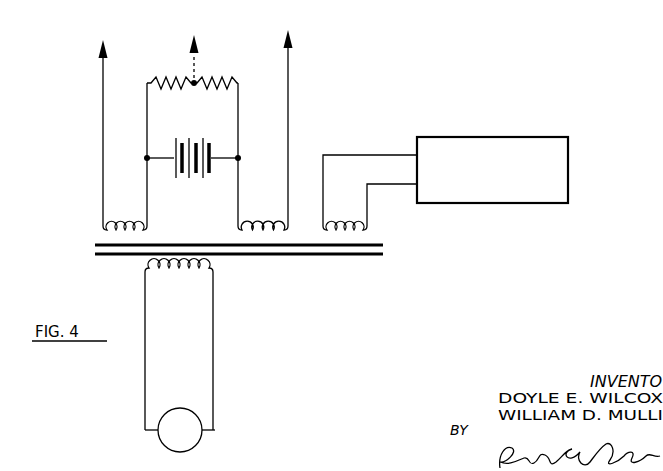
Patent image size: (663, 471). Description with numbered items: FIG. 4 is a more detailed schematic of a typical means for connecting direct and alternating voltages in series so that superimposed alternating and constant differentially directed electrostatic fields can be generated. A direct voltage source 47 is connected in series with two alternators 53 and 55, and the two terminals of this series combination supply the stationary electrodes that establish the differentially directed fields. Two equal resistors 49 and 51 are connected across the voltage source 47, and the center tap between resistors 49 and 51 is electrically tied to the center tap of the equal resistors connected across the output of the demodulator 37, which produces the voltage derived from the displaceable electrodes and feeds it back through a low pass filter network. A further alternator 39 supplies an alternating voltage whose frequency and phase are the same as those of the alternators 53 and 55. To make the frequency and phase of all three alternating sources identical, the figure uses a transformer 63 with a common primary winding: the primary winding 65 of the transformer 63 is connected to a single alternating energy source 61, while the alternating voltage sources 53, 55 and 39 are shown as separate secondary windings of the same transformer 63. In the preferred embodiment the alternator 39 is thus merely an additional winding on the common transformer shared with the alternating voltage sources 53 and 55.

The demodulator 37 is at (553, 158).
The alternator 39 is at (362, 233).
The voltage source 47 is at (204, 178).
The resistor 49 is at (168, 80).
The resistor 51 is at (219, 80).
The alternator 53 is at (108, 229).
The alternator 55 is at (275, 230).
The alternating energy source 61 is at (192, 443).
The transformer 63 is at (372, 257).
The primary winding 65 is at (210, 268).